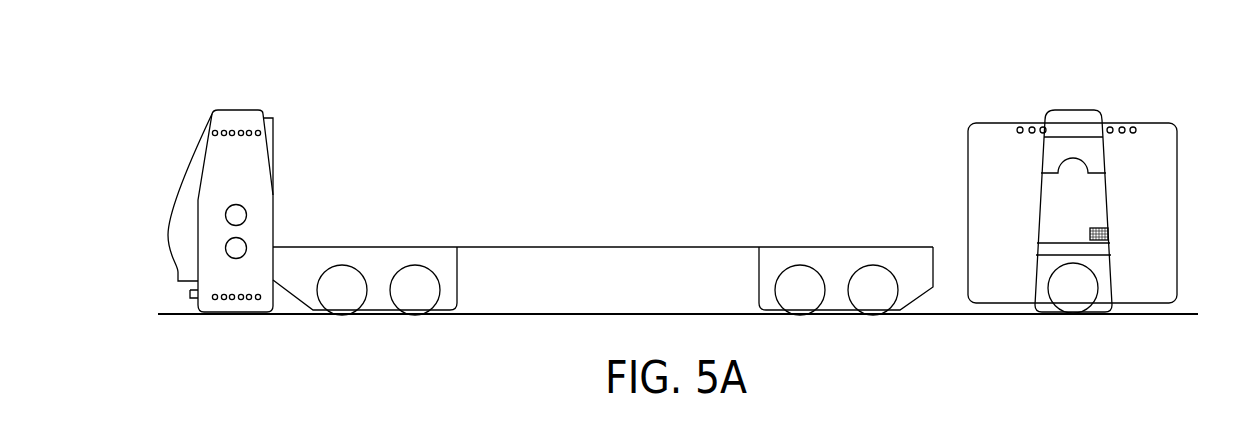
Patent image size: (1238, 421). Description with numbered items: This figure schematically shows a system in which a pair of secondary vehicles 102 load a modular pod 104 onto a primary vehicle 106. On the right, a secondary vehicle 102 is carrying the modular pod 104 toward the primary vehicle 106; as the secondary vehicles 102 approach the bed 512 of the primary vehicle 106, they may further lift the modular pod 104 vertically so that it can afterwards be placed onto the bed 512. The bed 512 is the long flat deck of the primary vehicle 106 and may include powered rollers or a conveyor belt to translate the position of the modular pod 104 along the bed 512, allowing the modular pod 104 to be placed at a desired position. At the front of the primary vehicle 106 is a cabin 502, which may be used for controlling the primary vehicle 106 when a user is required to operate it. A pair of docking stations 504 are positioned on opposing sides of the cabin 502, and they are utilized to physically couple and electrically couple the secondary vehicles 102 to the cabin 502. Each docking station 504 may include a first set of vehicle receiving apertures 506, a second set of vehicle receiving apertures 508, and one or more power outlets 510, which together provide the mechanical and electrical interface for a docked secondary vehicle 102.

The secondary vehicle 102 is at (1040, 108).
The modular pod 104 is at (1158, 124).
The primary vehicle 106 is at (412, 120).
The cabin 502 is at (217, 107).
The docking station 504 is at (200, 170).
The first set of vehicle receiving apertures 506 is at (242, 131).
The second set of vehicle receiving apertures 508 is at (233, 293).
The power outlet 510 is at (247, 213).
The bed 512 is at (640, 247).